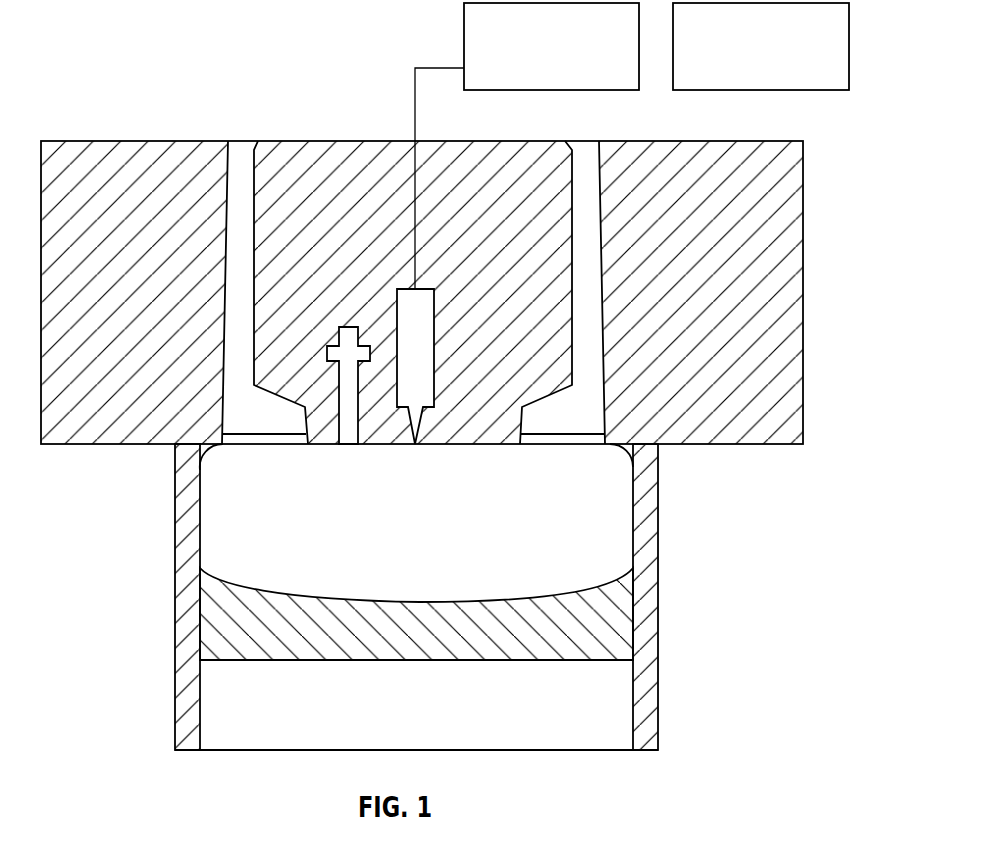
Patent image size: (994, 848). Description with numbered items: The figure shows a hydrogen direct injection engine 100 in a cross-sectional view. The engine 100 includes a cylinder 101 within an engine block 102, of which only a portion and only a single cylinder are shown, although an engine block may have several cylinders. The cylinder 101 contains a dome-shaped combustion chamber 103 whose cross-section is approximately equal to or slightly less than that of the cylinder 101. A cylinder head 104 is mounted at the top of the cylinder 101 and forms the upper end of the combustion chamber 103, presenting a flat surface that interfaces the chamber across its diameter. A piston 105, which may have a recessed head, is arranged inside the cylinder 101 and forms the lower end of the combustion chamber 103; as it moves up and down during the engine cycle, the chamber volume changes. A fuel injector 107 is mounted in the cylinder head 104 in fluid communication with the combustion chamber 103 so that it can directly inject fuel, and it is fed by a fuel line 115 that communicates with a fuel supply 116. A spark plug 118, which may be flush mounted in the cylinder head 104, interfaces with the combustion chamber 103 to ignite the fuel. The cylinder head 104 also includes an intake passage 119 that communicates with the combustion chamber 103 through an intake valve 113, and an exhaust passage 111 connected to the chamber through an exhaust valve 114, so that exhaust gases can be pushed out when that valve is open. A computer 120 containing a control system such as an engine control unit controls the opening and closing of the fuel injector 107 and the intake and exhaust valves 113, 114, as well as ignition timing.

The hydrogen direct injection engine 100 is at (91, 71).
The cylinder 101 is at (582, 730).
The engine block 102 is at (660, 697).
The combustion chamber 103 is at (437, 571).
The cylinder head 104 is at (803, 260).
The piston 105 is at (417, 655).
The fuel injector 107 is at (410, 289).
The exhaust passage 111 is at (245, 153).
The intake valve 113 is at (577, 438).
The exhaust valve 114 is at (275, 439).
The fuel line 115 is at (440, 66).
The fuel supply 116 is at (573, 78).
The spark plug 118 is at (349, 327).
The intake passage 119 is at (588, 160).
The computer 120 is at (782, 78).